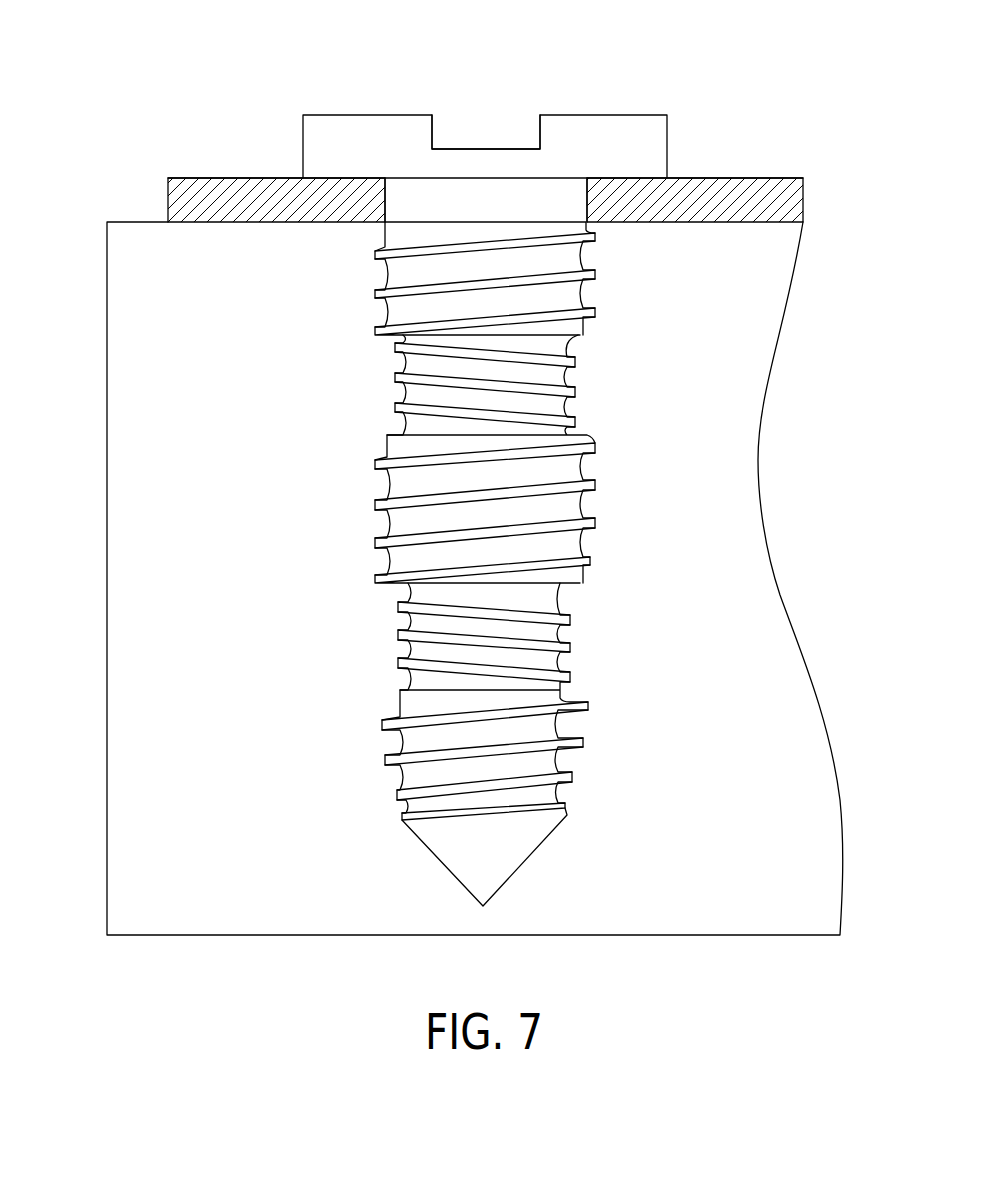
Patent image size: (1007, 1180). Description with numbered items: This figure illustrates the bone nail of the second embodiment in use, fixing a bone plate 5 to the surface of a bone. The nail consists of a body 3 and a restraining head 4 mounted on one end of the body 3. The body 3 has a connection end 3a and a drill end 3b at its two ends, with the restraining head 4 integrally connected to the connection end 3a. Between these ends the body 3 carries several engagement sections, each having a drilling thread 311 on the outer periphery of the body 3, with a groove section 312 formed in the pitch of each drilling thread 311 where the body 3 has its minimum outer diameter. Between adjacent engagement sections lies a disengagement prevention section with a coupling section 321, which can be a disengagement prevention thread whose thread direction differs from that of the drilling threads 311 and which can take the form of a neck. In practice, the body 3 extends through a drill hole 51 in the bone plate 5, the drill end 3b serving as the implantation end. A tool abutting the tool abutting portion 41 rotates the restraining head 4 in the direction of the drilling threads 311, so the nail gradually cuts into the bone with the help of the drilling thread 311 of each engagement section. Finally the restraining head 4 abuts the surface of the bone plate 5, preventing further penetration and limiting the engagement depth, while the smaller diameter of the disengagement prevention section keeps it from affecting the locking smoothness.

The body 3 is at (462, 512).
The connection end 3a is at (423, 197).
The drill end 3b is at (497, 876).
The restraining head 4 is at (485, 97).
The tool abutting portion 41 is at (477, 148).
The bone plate 5 is at (712, 193).
The drill hole 51 is at (582, 192).
The drilling thread 311 is at (380, 468).
The groove section 312 is at (382, 479).
The coupling section 321 is at (572, 368).